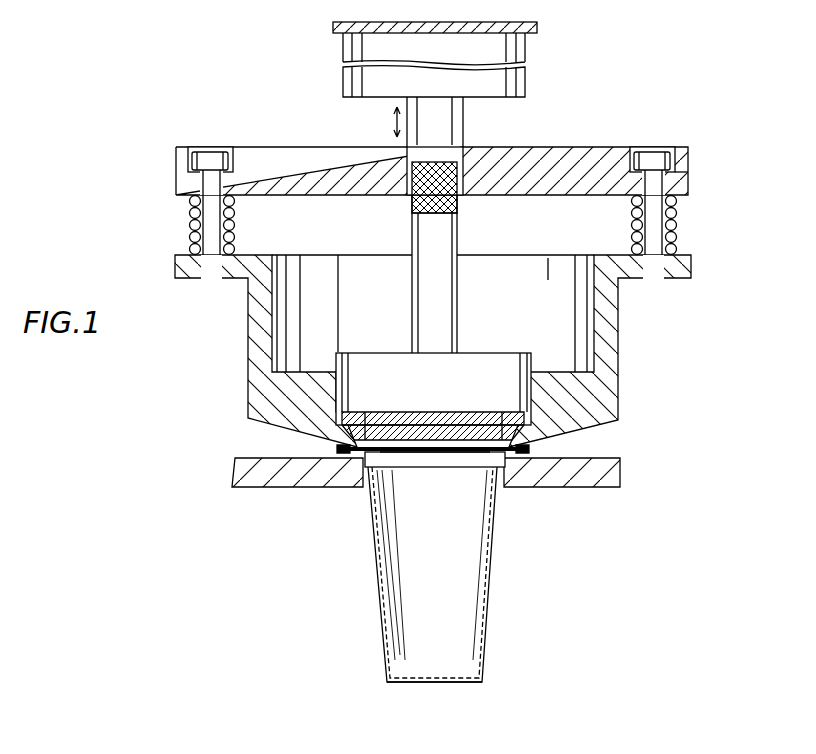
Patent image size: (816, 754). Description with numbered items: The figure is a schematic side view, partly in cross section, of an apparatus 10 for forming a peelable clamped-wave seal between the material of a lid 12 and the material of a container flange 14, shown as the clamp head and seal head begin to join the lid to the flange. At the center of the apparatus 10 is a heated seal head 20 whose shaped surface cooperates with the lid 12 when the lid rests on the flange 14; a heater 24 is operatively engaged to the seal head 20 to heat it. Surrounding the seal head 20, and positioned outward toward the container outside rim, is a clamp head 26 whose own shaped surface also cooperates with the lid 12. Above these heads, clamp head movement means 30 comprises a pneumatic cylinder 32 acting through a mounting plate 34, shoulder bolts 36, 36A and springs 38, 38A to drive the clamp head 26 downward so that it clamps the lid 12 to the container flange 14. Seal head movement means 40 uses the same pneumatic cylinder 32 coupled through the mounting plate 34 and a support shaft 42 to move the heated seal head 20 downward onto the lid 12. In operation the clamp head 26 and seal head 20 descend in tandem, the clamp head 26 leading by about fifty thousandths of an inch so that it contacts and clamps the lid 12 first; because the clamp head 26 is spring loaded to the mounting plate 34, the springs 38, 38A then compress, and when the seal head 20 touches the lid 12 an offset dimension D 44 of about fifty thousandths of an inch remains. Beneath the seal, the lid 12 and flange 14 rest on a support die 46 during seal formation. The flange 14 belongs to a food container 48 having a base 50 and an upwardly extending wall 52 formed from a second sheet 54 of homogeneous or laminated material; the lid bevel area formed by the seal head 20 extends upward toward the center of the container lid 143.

The apparatus 10 is at (660, 40).
The lid 12 is at (527, 447).
The container flange 14 is at (530, 462).
The heated seal head 20 is at (533, 418).
The heater 24 is at (457, 415).
The clamp head 26 is at (248, 378).
The clamp head movement means 30 is at (155, 159).
The pneumatic cylinder 32 is at (527, 43).
The mounting plate 34 is at (552, 147).
The shoulder bolt 36 is at (208, 152).
The shoulder bolt 36A is at (660, 147).
The spring 38 is at (190, 233).
The spring 38A is at (676, 228).
The seal head movement means 40 is at (545, 83).
The support shaft 42 is at (460, 232).
The offset dimension D 44 is at (688, 172).
The support die 46 is at (622, 472).
The food container 48 is at (441, 588).
The base 50 is at (437, 683).
The upwardly extending wall 52 is at (485, 665).
The second sheet 54 is at (490, 572).
The center of the container lid 143 is at (435, 452).